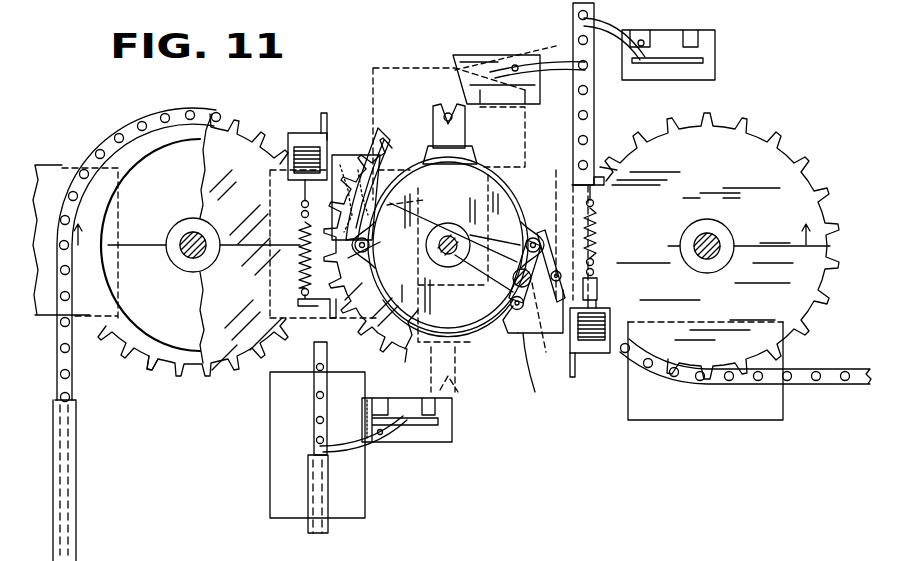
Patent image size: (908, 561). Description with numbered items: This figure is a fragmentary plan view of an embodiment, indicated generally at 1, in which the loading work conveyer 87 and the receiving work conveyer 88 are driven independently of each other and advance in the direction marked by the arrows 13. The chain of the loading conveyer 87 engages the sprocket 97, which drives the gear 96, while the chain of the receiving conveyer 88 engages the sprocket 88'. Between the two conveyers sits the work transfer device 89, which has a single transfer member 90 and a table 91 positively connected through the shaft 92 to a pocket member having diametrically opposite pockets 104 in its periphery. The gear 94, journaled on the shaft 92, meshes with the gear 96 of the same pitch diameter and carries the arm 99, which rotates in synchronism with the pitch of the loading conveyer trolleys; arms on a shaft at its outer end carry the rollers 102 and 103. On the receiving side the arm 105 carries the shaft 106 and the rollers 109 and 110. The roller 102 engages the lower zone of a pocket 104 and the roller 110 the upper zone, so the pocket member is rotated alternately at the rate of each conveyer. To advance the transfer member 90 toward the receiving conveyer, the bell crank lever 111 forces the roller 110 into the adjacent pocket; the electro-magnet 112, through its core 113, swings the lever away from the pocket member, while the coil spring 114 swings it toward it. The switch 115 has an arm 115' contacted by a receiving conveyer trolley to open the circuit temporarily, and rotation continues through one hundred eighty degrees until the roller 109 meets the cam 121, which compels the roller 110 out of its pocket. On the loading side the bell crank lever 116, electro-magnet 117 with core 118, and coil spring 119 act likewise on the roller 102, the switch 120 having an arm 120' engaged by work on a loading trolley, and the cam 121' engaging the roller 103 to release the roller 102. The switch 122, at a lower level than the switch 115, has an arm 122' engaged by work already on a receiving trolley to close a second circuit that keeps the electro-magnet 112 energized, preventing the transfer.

The conveyor drive apparatus 1 is at (120, 114).
The direction of chain travel 13 is at (430, 245).
The loading work conveyer 87 is at (111, 359).
The receiving work conveyer 88 is at (713, 193).
The sprocket 88' is at (719, 263).
The work transfer device 89 is at (492, 332).
The transfer member 90 is at (466, 132).
The table 91 is at (473, 160).
The shaft 92 is at (448, 262).
The gear 94 is at (340, 437).
The gear 96 is at (193, 257).
The sprocket 97 is at (160, 360).
The arm 99 is at (448, 252).
The roller 102 is at (371, 250).
The roller 103 is at (372, 200).
The pockets 104 is at (370, 250).
The arm 105 is at (500, 250).
The shaft 106 is at (535, 345).
The roller 109 is at (535, 355).
The roller 110 is at (534, 238).
The bell crank lever 111 is at (550, 258).
The electro-magnet 112 is at (592, 342).
The core 113 is at (598, 300).
The coil spring 114 is at (612, 232).
The switch 115 is at (506, 65).
The switch arm 115' is at (537, 50).
The bell crank lever 116 is at (300, 266).
The electro-magnet 117 is at (305, 150).
The core 118 is at (217, 221).
The coil spring 119 is at (247, 304).
The switch 120 is at (409, 434).
The switch arm 120' is at (367, 443).
The cam 121 is at (356, 182).
The cam 121' is at (457, 330).
The switch 122 is at (695, 55).
The switch arm 122' is at (628, 31).